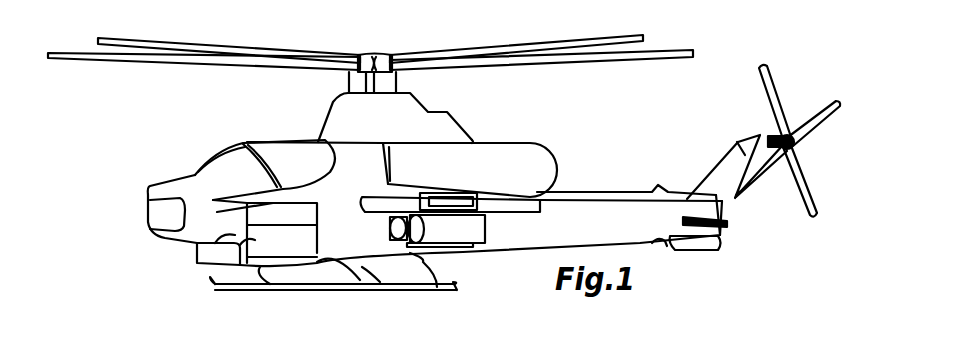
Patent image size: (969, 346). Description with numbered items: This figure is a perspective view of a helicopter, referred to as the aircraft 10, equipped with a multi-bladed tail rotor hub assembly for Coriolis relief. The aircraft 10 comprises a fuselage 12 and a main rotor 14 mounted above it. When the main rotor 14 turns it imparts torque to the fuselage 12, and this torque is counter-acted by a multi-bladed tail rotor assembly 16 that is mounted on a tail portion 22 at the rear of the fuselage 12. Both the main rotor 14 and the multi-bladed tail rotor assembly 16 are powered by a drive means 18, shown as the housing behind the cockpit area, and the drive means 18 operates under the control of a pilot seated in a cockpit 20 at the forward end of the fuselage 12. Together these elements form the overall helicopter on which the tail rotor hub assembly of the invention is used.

The aircraft 10 is at (152, 157).
The fuselage 12 is at (463, 257).
The main rotor 14 is at (297, 53).
The multi-bladed tail rotor assembly 16 is at (777, 87).
The drive means 18 is at (497, 143).
The cockpit 20 is at (245, 142).
The tail portion 22 is at (745, 127).